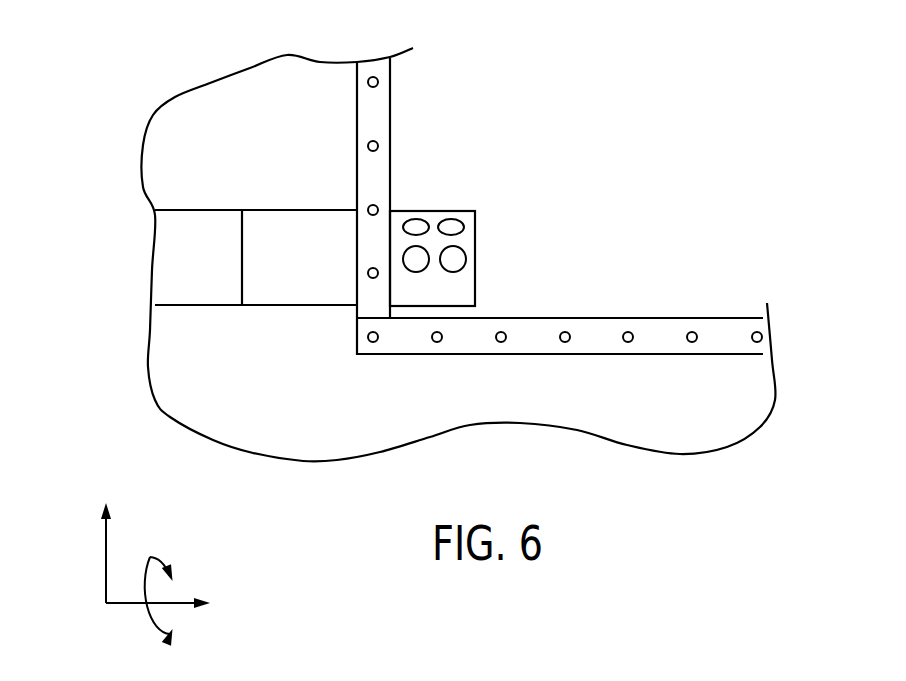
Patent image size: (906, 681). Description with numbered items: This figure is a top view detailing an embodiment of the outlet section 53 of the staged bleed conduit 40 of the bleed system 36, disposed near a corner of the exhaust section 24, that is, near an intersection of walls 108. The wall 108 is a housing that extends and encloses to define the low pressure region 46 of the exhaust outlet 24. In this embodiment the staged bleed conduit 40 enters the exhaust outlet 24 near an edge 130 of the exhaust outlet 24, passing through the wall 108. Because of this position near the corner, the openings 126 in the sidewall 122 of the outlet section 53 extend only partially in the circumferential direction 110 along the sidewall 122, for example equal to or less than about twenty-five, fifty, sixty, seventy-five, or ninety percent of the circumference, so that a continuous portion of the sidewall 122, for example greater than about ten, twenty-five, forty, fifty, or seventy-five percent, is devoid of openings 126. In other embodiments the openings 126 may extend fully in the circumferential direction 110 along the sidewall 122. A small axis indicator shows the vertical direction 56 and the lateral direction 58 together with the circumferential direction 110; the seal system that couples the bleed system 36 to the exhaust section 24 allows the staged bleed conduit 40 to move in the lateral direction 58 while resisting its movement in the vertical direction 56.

The bleed system 36 is at (215, 52).
The staged bleed conduit 40 is at (300, 243).
The wall 108 is at (377, 115).
The outlet section 53 is at (471, 220).
The openings 126 is at (450, 258).
The sidewall 122 is at (450, 293).
The edge 130 is at (437, 343).
The exhaust section 24 is at (658, 212).
The low pressure region 46 is at (693, 227).
The vertical direction 56 is at (106, 558).
The lateral direction 58 is at (112, 607).
The circumferential direction 110 is at (148, 557).